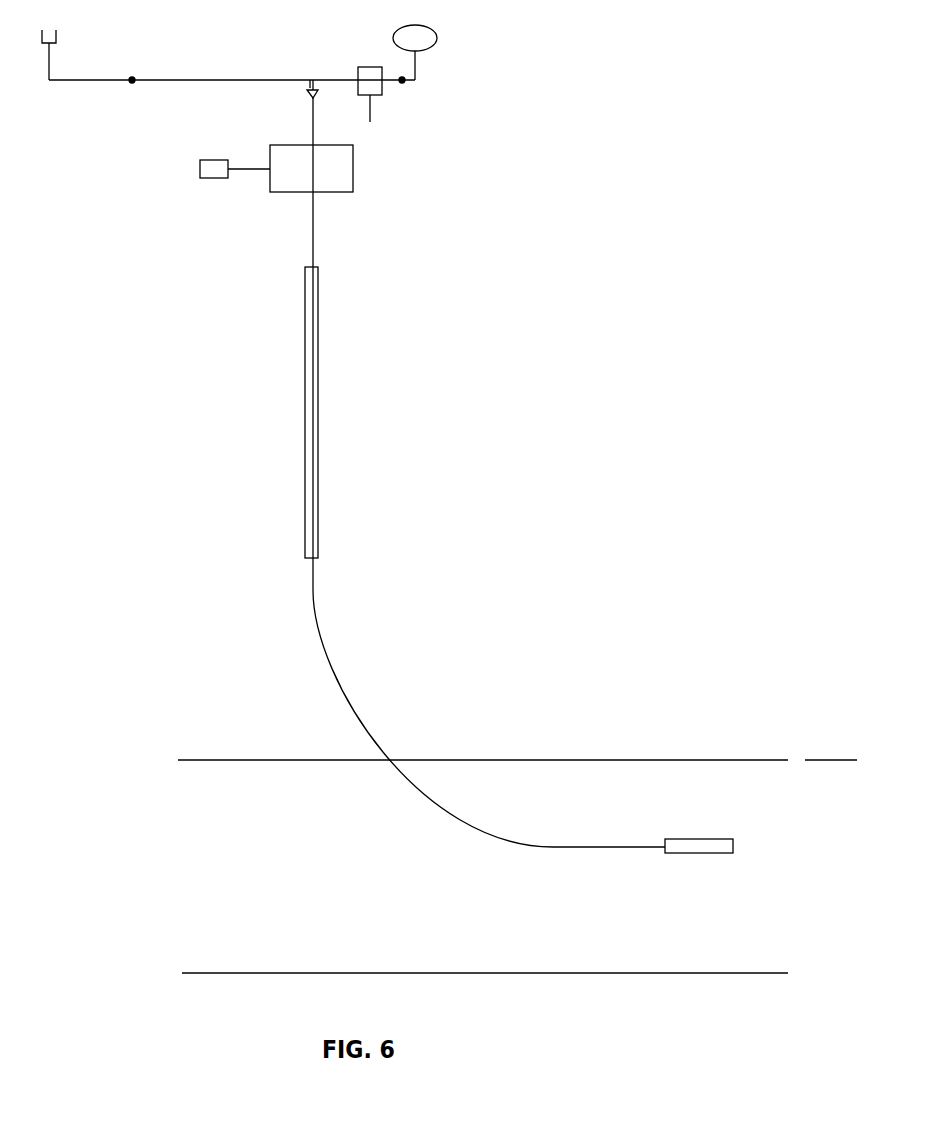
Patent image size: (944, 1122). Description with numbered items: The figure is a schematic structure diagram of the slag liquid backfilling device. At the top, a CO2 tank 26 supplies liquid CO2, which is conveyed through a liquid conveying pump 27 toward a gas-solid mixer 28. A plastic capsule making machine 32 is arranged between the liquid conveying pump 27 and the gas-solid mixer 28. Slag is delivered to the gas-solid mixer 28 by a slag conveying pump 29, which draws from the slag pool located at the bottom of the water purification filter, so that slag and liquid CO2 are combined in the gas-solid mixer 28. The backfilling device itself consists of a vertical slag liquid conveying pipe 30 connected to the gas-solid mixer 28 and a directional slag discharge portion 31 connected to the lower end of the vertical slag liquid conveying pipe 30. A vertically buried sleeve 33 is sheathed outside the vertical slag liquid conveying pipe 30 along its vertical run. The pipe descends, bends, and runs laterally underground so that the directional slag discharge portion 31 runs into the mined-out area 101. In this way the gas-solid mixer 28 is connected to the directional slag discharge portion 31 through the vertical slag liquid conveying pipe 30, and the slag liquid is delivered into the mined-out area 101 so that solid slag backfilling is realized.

The CO2 tank 26 is at (416, 40).
The liquid conveying pump 27 is at (404, 83).
The gas-solid mixer 28 is at (318, 94).
The slag conveying pump 29 is at (132, 78).
The vertical slag liquid conveying pipe 30 is at (313, 377).
The directional slag discharge portion 31 is at (700, 845).
The plastic capsule making machine 32 is at (365, 72).
The vertically buried sleeve 33 is at (318, 308).
The mined-out area 101 is at (257, 810).